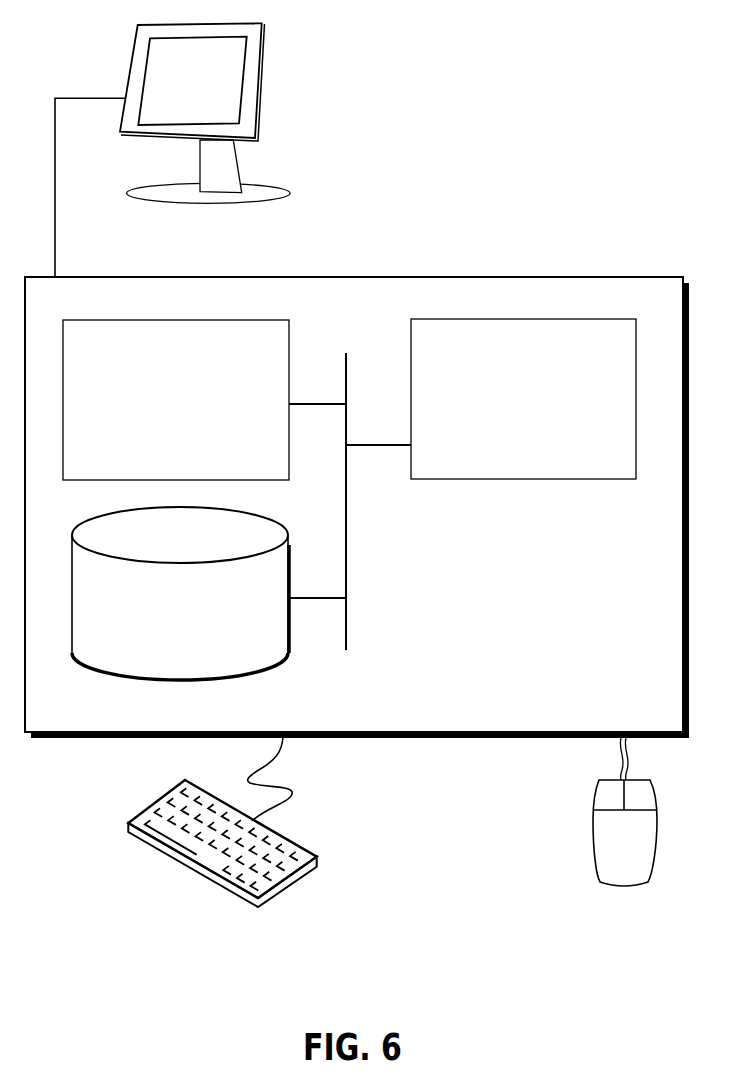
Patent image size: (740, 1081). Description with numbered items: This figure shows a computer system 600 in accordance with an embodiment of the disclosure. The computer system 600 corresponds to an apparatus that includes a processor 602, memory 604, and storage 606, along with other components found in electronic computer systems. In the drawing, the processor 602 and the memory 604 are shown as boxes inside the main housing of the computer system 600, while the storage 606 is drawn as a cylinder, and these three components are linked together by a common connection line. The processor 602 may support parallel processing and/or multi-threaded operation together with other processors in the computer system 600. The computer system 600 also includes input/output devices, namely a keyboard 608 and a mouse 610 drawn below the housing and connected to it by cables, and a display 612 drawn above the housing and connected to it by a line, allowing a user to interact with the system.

The computer system 600 is at (400, 255).
The processor 602 is at (506, 410).
The memory 604 is at (156, 410).
The storage 606 is at (162, 621).
The keyboard 608 is at (147, 840).
The mouse 610 is at (603, 852).
The display 612 is at (172, 150).